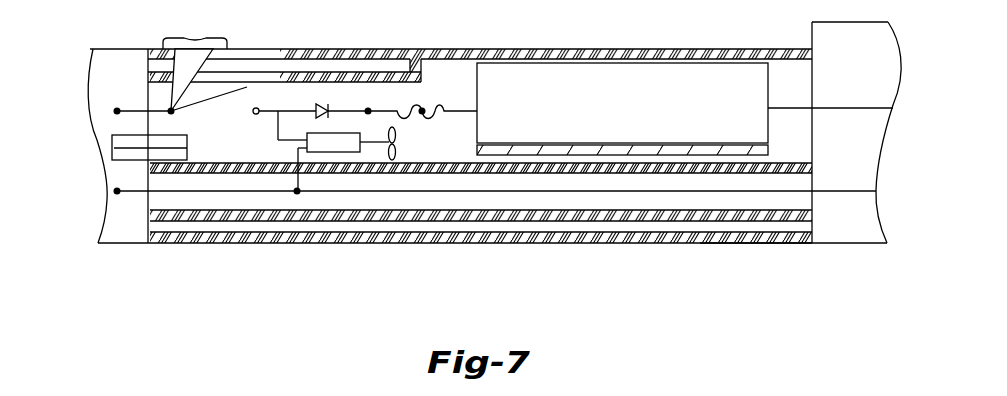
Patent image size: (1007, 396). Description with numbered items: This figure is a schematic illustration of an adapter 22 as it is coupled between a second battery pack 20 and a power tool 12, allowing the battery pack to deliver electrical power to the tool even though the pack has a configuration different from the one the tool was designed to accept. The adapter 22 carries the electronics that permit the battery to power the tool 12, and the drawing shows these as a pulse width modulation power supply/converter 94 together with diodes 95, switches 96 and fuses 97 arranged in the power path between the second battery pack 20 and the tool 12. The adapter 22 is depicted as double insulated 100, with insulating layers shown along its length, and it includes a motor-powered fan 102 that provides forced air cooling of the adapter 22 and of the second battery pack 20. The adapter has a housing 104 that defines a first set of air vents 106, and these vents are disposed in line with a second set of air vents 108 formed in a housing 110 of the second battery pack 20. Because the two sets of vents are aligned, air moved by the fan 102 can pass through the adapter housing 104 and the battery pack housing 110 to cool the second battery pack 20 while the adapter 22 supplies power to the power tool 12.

The power tool 12 is at (812, 33).
The second battery pack 20 is at (103, 80).
The adapter 22 is at (656, 250).
The pulse width modulation power supply/converter 94 is at (702, 75).
The diodes 95 is at (321, 107).
The switches 96 is at (175, 63).
The fuses 97 is at (439, 103).
The double insulation 100 is at (233, 240).
The motor-powered fan 102 is at (384, 166).
The housing 104 is at (801, 244).
The first set of air vents 106 is at (187, 141).
The second set of air vents 108 is at (113, 153).
The housing 110 is at (97, 49).